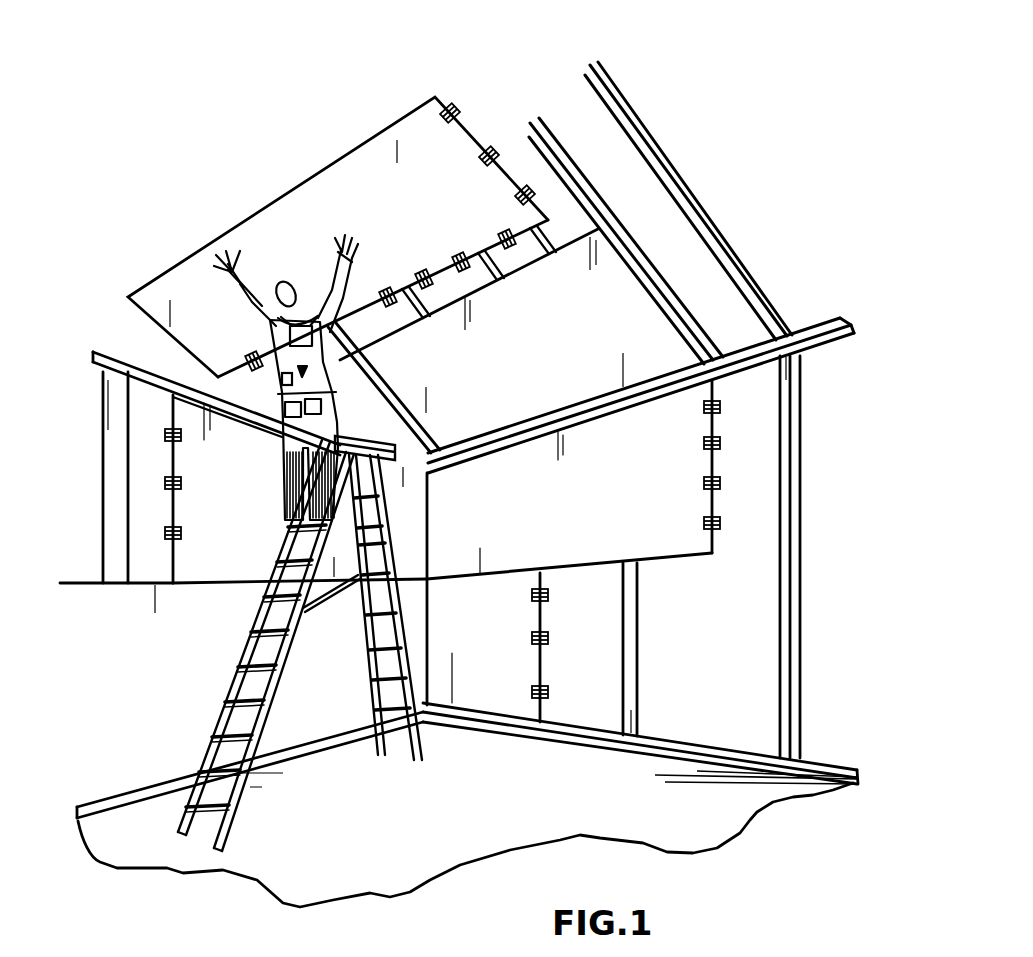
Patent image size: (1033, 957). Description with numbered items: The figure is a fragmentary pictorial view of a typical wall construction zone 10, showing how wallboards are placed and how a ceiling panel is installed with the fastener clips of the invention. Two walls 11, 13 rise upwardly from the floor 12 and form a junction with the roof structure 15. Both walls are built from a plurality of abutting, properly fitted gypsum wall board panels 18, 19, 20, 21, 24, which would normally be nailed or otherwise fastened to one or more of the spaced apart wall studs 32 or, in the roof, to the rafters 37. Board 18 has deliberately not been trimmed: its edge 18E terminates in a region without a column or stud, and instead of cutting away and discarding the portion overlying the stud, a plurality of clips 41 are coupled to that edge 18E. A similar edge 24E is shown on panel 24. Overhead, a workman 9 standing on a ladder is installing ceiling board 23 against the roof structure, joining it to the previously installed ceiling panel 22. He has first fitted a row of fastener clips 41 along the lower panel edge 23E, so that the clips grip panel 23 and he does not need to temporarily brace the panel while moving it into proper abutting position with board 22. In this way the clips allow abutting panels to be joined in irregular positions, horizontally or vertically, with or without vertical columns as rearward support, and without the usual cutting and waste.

The workman 9 is at (283, 379).
The wall construction zone 10 is at (752, 588).
The wall 11 is at (755, 702).
The floor 12 is at (465, 845).
The wall 13 is at (129, 757).
The roof structure 15 is at (722, 293).
The wall board panel 18 is at (569, 504).
The panel edge 18E is at (716, 535).
The wall board panel 19 is at (498, 683).
The wall board panel 20 is at (297, 717).
The wall board panel 21 is at (265, 649).
The ceiling panel 22 is at (469, 295).
The ceiling board 23 is at (350, 177).
The panel edge 23E is at (432, 285).
The wall board panel 24 is at (250, 557).
The panel edge 24E is at (220, 494).
The wall stud 32 is at (800, 466).
The rafter 37 is at (648, 210).
The clip 41 is at (750, 443).